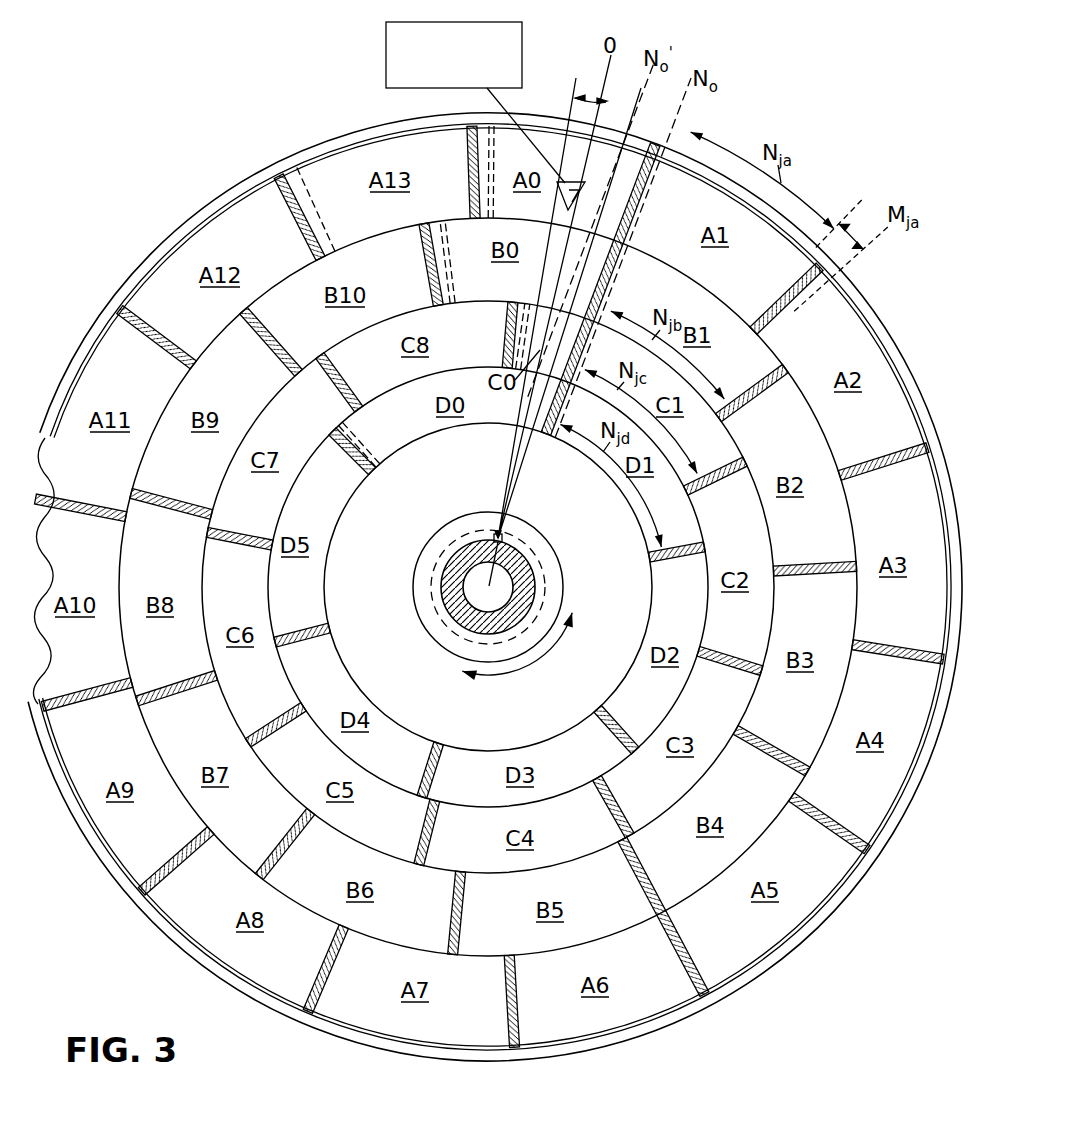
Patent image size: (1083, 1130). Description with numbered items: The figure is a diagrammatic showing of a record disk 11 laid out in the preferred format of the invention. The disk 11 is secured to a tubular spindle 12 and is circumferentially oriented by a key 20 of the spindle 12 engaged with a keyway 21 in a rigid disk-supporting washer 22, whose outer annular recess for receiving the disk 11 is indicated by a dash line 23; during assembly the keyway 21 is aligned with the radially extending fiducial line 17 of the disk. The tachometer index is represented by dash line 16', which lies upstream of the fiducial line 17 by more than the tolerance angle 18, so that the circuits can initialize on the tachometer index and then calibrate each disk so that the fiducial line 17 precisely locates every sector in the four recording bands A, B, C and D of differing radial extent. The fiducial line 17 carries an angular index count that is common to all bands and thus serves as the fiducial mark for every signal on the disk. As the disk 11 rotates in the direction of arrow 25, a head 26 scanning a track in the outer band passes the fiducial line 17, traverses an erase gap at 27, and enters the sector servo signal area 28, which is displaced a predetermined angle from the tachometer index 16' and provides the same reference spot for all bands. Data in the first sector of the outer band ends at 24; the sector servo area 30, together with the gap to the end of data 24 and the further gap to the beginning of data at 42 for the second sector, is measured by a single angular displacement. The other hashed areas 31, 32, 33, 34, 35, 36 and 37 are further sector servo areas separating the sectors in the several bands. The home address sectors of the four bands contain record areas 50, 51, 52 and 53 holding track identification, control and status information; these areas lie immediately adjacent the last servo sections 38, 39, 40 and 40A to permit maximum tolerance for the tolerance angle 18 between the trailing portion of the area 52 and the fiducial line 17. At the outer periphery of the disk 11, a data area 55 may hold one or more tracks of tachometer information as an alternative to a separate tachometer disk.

The disk 11 is at (880, 858).
The tubular spindle 12 is at (537, 565).
The tachometer index line 16' is at (551, 296).
The radial fiducial line 17 is at (642, 203).
The tolerance angle 18 is at (600, 94).
The key 20 is at (506, 538).
The keyway 21 is at (496, 533).
The disk-supporting washer 22 is at (416, 560).
The dash line 23 is at (437, 607).
The end of data 24 is at (796, 290).
The arrow 25 is at (533, 668).
The head 26 is at (558, 198).
The erase gap 27 is at (626, 235).
The sector servo signal area 28 is at (612, 283).
The sector servo area 30 is at (775, 331).
The sector servo area 31 is at (863, 476).
The sector servo area 32 is at (880, 646).
The sector servo area 33 is at (743, 404).
The sector servo area 34 is at (790, 578).
The sector servo area 35 is at (710, 484).
The sector servo area 36 is at (738, 665).
The sector servo area 37 is at (665, 557).
The last servo section 38 is at (471, 158).
The last servo section 39 is at (431, 256).
The last servo section 40 is at (510, 336).
The last servo section 40A is at (356, 452).
The beginning of data 42 is at (803, 322).
The home address record area 50 is at (495, 160).
The home address record area 51 is at (449, 249).
The home address record area 52 is at (527, 300).
The home address record area 53 is at (361, 443).
The data area 55 is at (884, 338).